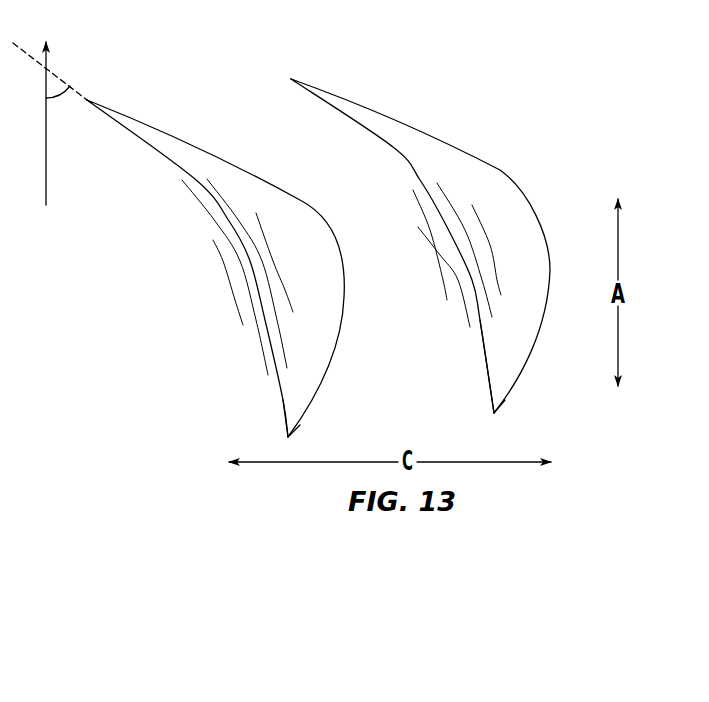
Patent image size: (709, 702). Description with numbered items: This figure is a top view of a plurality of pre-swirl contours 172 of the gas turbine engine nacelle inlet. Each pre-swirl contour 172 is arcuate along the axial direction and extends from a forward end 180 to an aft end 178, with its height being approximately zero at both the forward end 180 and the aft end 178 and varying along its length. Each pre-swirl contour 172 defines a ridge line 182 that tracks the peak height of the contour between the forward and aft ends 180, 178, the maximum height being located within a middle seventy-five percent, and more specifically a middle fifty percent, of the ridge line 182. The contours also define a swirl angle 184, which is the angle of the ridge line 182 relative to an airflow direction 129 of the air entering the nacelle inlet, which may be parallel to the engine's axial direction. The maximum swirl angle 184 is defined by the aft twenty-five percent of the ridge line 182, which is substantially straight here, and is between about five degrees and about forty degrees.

The airflow direction 129 is at (47, 188).
The pre-swirl contour 172 is at (237, 172).
The aft end 178 is at (88, 98).
The forward end 180 is at (277, 405).
The ridge line 182 is at (262, 287).
The swirl angle 184 is at (63, 95).